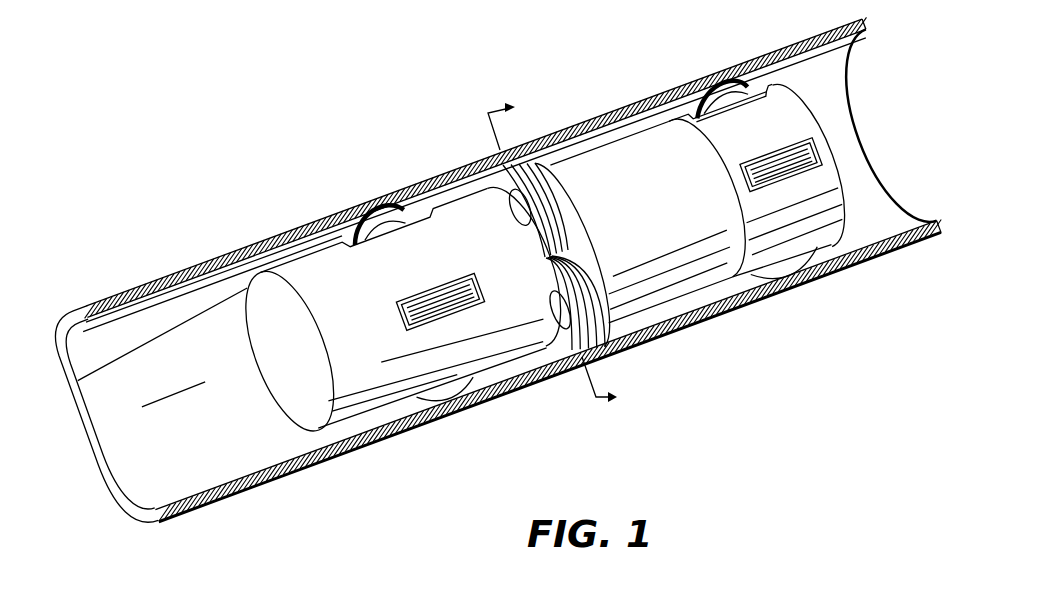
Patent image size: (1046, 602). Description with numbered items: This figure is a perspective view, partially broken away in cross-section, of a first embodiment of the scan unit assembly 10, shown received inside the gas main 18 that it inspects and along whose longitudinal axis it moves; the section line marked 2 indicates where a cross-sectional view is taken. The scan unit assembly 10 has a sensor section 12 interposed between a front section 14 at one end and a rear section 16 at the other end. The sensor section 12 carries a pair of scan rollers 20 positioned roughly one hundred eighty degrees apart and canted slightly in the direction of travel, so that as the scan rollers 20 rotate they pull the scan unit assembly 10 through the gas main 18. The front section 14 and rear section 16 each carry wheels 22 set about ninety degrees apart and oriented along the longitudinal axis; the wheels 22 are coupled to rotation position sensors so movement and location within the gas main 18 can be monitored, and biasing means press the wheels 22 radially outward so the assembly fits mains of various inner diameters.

The scan unit assembly 10 is at (561, 140).
The sensor section 12 is at (657, 143).
The front section 14 is at (313, 268).
The rear section 16 is at (795, 123).
The gas main 18 is at (843, 267).
The scan rollers 20 is at (553, 152).
The wheels 22 is at (407, 217).
The section line 2- 2 is at (560, 253).